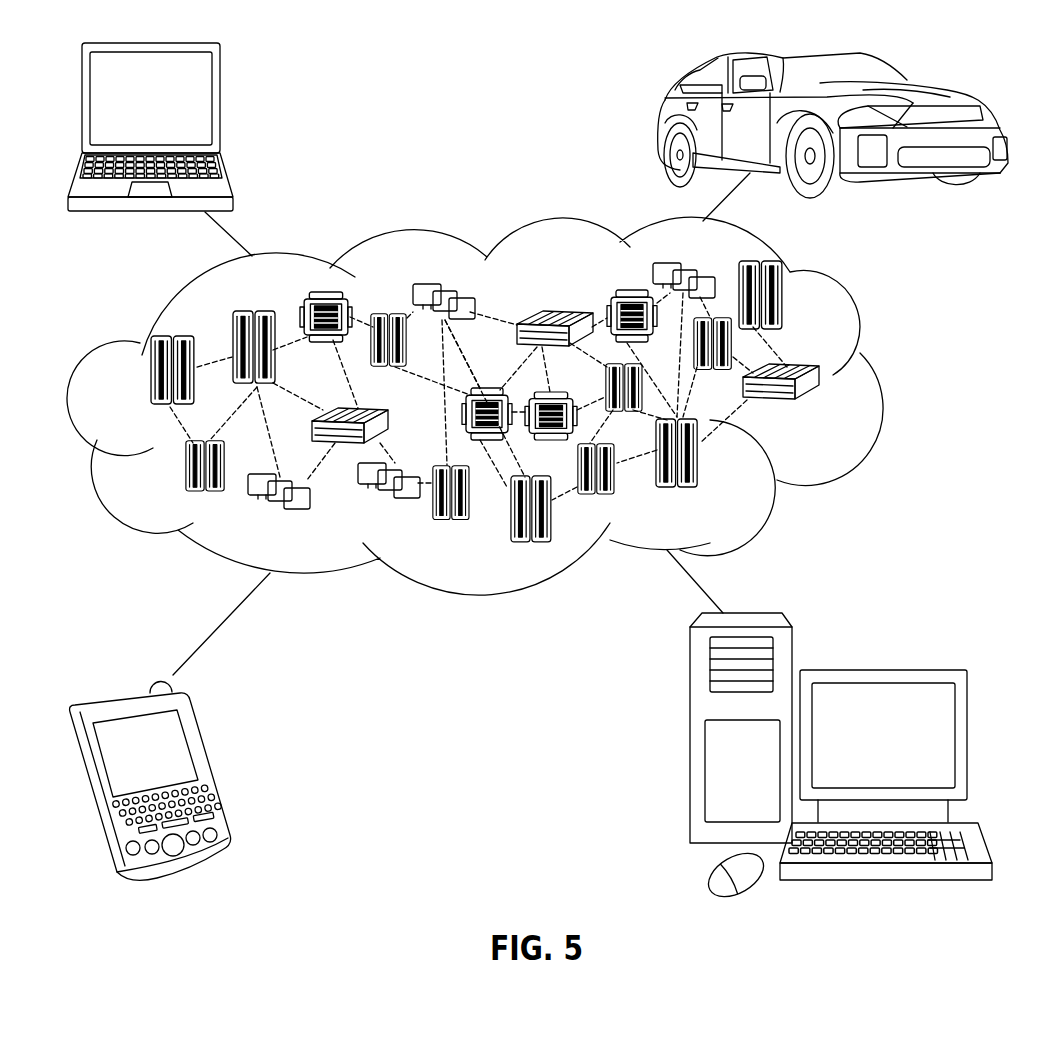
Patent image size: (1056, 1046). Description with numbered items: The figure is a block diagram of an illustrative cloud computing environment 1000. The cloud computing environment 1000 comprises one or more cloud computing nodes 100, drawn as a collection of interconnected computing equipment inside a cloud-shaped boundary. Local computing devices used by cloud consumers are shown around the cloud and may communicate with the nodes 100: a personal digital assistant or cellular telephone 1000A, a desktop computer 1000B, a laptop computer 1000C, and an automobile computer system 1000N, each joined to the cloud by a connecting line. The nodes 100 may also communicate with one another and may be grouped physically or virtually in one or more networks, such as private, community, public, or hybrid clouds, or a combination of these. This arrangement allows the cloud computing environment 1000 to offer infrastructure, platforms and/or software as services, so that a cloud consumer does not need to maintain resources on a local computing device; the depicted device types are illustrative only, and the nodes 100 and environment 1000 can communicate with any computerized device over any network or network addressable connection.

The cloud computing nodes 100 is at (830, 414).
The cloud computing environment 1000 is at (880, 381).
The personal digital assistant (PDA) or cellular telephone 1000A is at (212, 766).
The desktop computer 1000B is at (880, 670).
The laptop computer 1000C is at (222, 106).
The automobile computer system 1000N is at (660, 119).